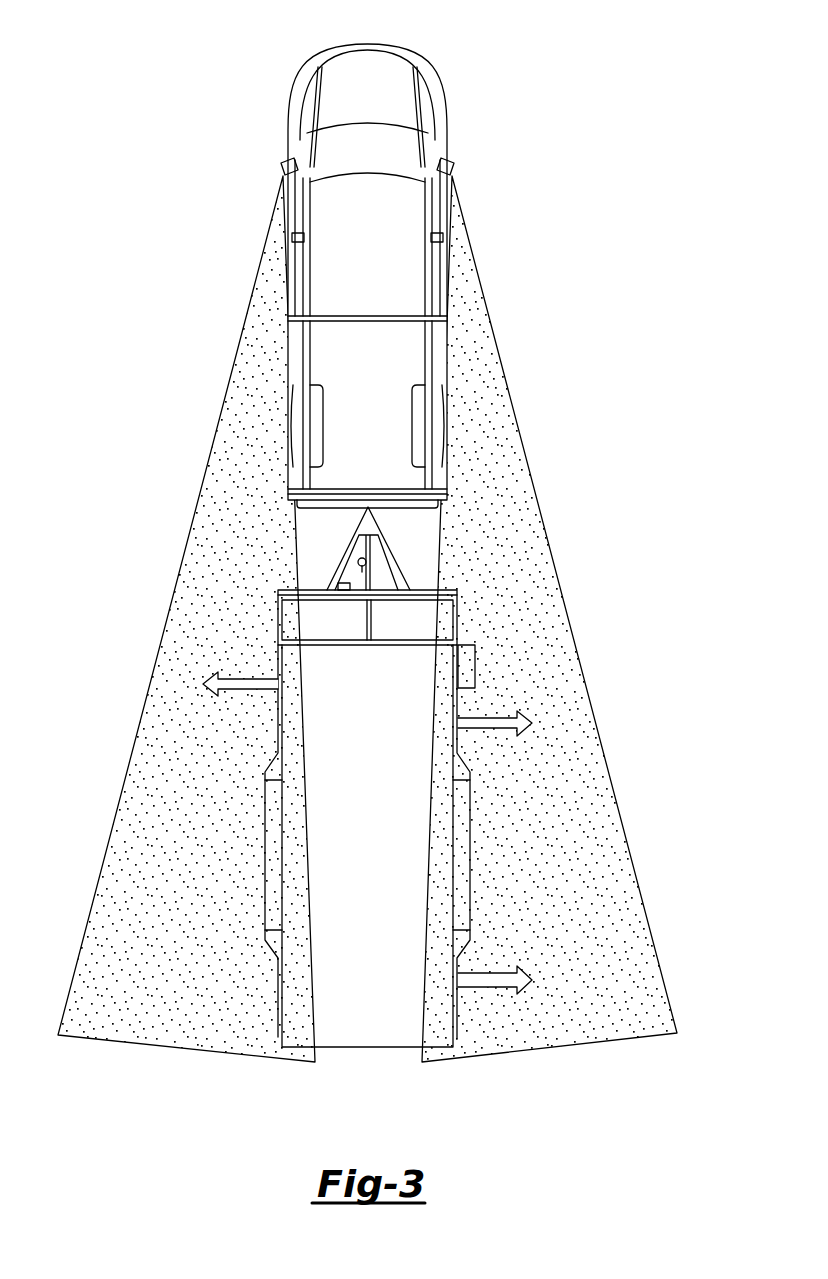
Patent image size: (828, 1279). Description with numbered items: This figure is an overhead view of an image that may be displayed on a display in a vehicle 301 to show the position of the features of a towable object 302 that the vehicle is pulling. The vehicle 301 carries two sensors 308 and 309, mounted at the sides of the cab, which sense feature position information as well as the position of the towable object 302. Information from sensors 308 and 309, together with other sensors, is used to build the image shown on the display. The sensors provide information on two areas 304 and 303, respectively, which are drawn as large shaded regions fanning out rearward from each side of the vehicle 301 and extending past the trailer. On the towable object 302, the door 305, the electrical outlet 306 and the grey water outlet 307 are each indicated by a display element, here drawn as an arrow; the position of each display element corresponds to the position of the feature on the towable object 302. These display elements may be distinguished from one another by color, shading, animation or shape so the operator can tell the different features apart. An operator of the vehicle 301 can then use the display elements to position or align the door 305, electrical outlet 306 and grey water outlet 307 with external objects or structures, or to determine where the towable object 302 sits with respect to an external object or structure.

The vehicle 301 is at (393, 44).
The towable object 302 is at (381, 855).
The area 303 is at (123, 1044).
The area 304 is at (612, 1042).
The door 305 is at (247, 678).
The electrical outlet 306 is at (496, 713).
The grey water outlet 307 is at (490, 970).
The sensor 308 is at (452, 157).
The sensor 309 is at (287, 158).